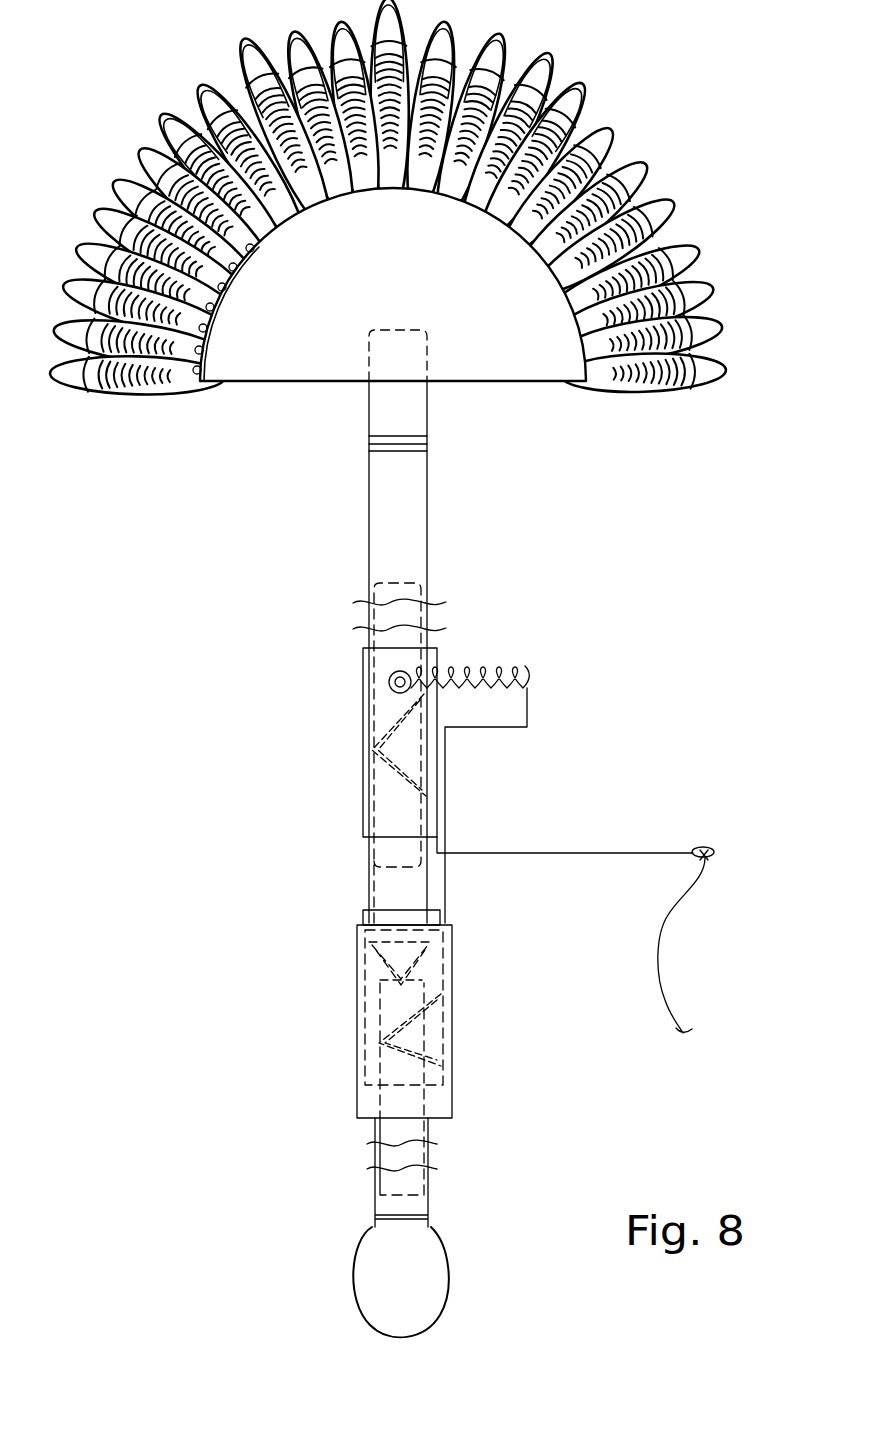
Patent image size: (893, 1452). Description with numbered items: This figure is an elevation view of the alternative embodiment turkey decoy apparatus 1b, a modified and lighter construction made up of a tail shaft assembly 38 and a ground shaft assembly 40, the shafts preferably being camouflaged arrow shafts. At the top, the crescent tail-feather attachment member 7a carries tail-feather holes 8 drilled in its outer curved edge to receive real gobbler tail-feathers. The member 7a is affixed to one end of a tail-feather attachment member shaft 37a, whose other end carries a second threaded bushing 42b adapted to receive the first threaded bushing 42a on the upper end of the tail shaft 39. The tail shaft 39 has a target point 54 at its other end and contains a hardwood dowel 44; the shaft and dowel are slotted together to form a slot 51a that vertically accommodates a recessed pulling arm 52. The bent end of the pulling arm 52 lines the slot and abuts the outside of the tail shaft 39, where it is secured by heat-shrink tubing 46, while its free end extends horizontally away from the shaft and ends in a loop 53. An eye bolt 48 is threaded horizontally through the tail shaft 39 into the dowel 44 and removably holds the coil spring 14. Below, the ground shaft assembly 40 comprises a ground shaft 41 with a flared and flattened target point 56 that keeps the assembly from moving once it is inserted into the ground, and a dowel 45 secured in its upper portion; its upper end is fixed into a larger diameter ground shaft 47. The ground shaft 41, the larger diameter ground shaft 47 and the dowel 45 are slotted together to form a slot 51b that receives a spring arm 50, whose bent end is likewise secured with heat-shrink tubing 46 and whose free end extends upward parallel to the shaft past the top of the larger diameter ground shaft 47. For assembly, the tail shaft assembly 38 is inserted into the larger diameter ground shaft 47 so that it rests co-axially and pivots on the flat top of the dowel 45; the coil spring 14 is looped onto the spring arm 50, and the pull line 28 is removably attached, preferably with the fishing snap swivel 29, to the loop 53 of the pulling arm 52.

The alternative embodiment turkey decoy apparatus 1b is at (607, 637).
The tail-feather attachment member 7a is at (255, 381).
The tail-feather holes 8 is at (197, 381).
The coil spring 14 is at (503, 668).
The pull line 28 is at (660, 970).
The fishing snap swivel 29 is at (702, 855).
The tail-feather attachment member shaft 37a is at (369, 349).
The tail shaft assembly 38 is at (347, 545).
The tail shaft 39 is at (427, 517).
The ground shaft assembly 40 is at (327, 1038).
The ground shaft 41 is at (375, 1210).
The first threaded bushing 42a is at (427, 445).
The second threaded bushing 42b is at (369, 438).
The dowel 44 is at (440, 607).
The dowel 45 is at (367, 1150).
The heat-shrink tubing 46 is at (363, 726).
The larger diameter ground shaft 47 is at (362, 918).
The eye bolt 48 is at (389, 684).
The spring arm 50 is at (527, 705).
The slot 51a is at (437, 752).
The slot 51b is at (432, 1030).
The pulling arm 52 is at (568, 852).
The loop 53 is at (728, 820).
The target point 54 is at (410, 965).
The flared and flattened target point 56 is at (450, 1273).